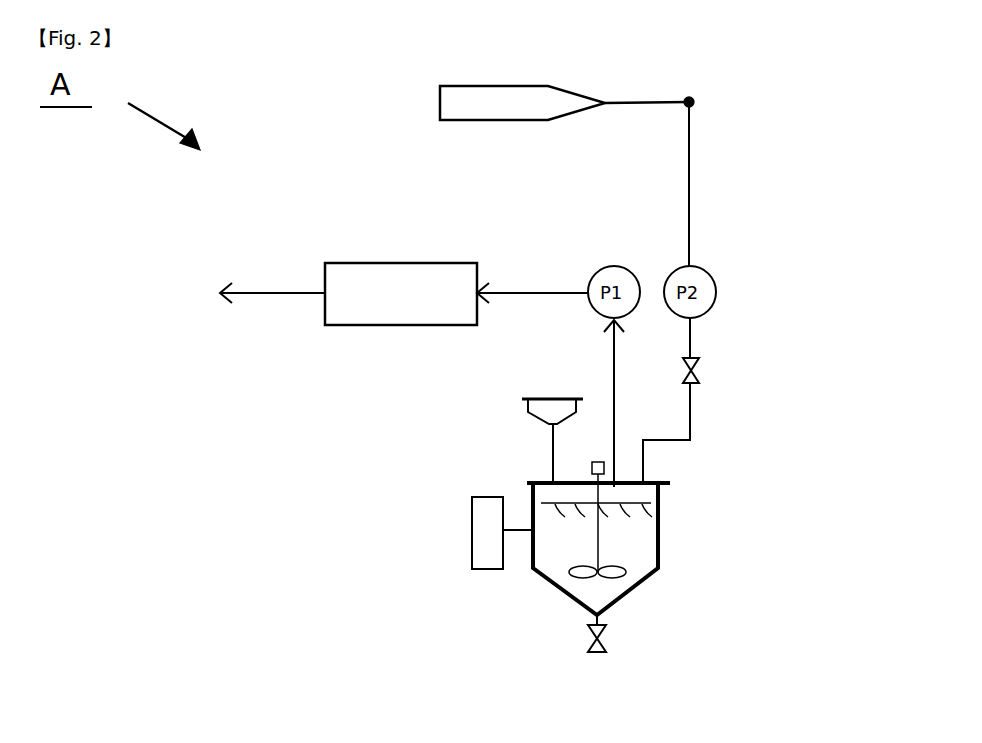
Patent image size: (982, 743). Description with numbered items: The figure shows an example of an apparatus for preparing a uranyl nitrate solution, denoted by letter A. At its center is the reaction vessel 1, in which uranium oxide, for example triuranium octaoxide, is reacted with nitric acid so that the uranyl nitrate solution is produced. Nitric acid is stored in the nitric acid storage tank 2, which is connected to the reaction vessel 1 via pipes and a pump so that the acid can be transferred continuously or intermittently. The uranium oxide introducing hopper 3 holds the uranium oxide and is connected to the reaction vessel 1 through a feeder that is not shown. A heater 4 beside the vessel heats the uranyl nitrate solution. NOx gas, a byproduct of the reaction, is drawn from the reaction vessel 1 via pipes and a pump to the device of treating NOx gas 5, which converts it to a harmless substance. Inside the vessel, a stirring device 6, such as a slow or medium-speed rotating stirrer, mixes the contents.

The reaction vessel 1 is at (660, 522).
The nitric acid storage tank 2 is at (440, 110).
The uranium oxide introducing hopper 3 is at (528, 411).
The heater 4 is at (472, 545).
The device of treating NOx gas 5 is at (325, 266).
The stirring device 6 is at (626, 574).